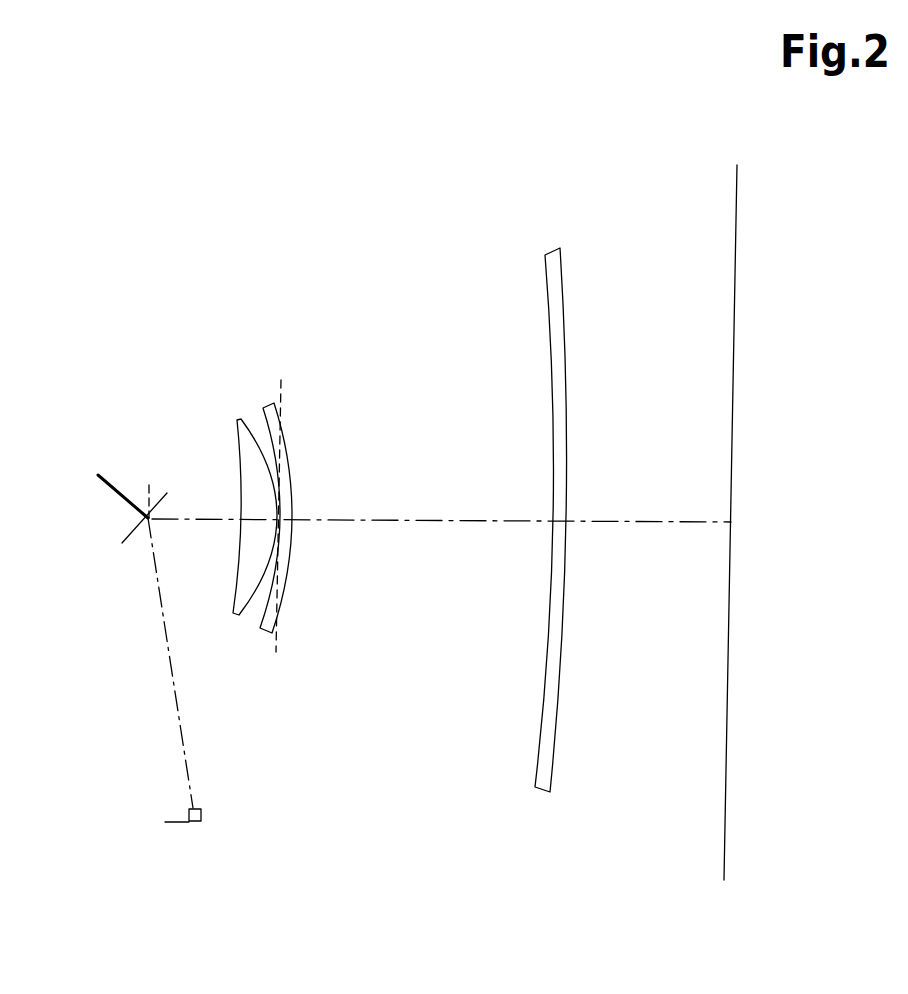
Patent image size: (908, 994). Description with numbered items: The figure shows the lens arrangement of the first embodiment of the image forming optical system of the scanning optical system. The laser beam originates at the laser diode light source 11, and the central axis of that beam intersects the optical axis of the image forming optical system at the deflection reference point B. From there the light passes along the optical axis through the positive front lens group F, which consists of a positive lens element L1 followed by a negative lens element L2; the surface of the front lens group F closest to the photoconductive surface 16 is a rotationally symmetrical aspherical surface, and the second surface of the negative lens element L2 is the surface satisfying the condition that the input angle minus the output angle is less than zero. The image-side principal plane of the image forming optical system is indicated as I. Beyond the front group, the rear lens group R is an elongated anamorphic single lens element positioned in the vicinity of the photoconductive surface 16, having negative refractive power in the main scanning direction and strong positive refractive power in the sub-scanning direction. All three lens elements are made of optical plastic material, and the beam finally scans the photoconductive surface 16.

The photoconductive surface 16 is at (737, 238).
The laser diode light source 11 is at (200, 813).
The deflection reference point B is at (147, 522).
The front lens group F is at (293, 357).
The positive lens element L1 is at (240, 595).
The negative lens element L2 is at (268, 618).
The image-side principal plane I is at (281, 397).
The rear lens group R is at (585, 236).